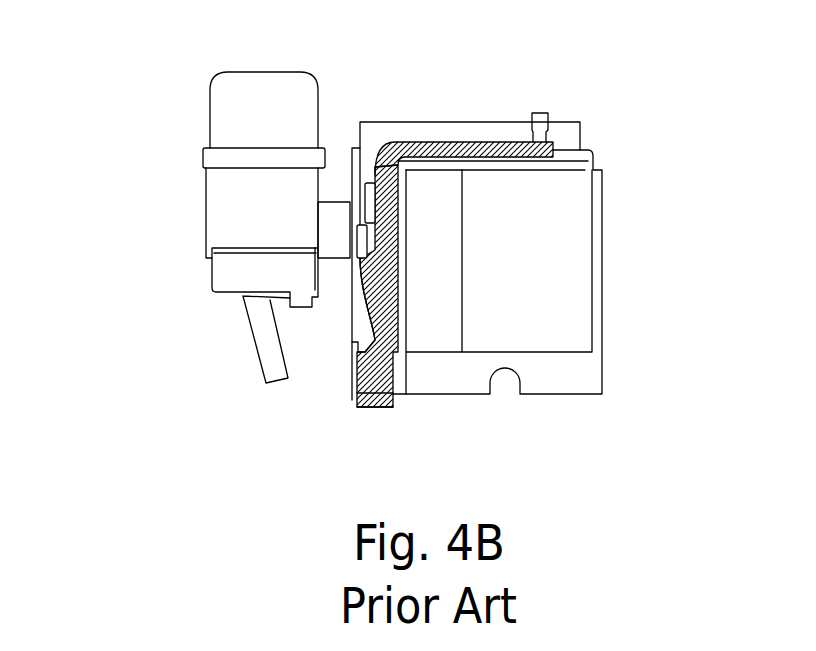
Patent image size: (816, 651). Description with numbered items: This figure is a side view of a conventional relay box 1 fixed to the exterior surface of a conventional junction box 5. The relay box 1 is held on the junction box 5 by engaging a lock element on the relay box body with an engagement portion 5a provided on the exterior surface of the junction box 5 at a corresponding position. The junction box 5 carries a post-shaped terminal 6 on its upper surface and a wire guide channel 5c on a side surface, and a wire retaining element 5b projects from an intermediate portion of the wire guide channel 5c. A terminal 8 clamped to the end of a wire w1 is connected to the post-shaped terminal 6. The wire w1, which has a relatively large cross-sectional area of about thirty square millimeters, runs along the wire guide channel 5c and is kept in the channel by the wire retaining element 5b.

The relay box 1 is at (196, 120).
The junction box 5 is at (612, 198).
The engagement portion 5a is at (332, 220).
The wire retaining element 5b is at (353, 317).
The wire guide channel 5c is at (397, 265).
The post-shaped terminal 6 is at (536, 113).
The terminal 8 is at (435, 142).
The wire w1 is at (393, 393).